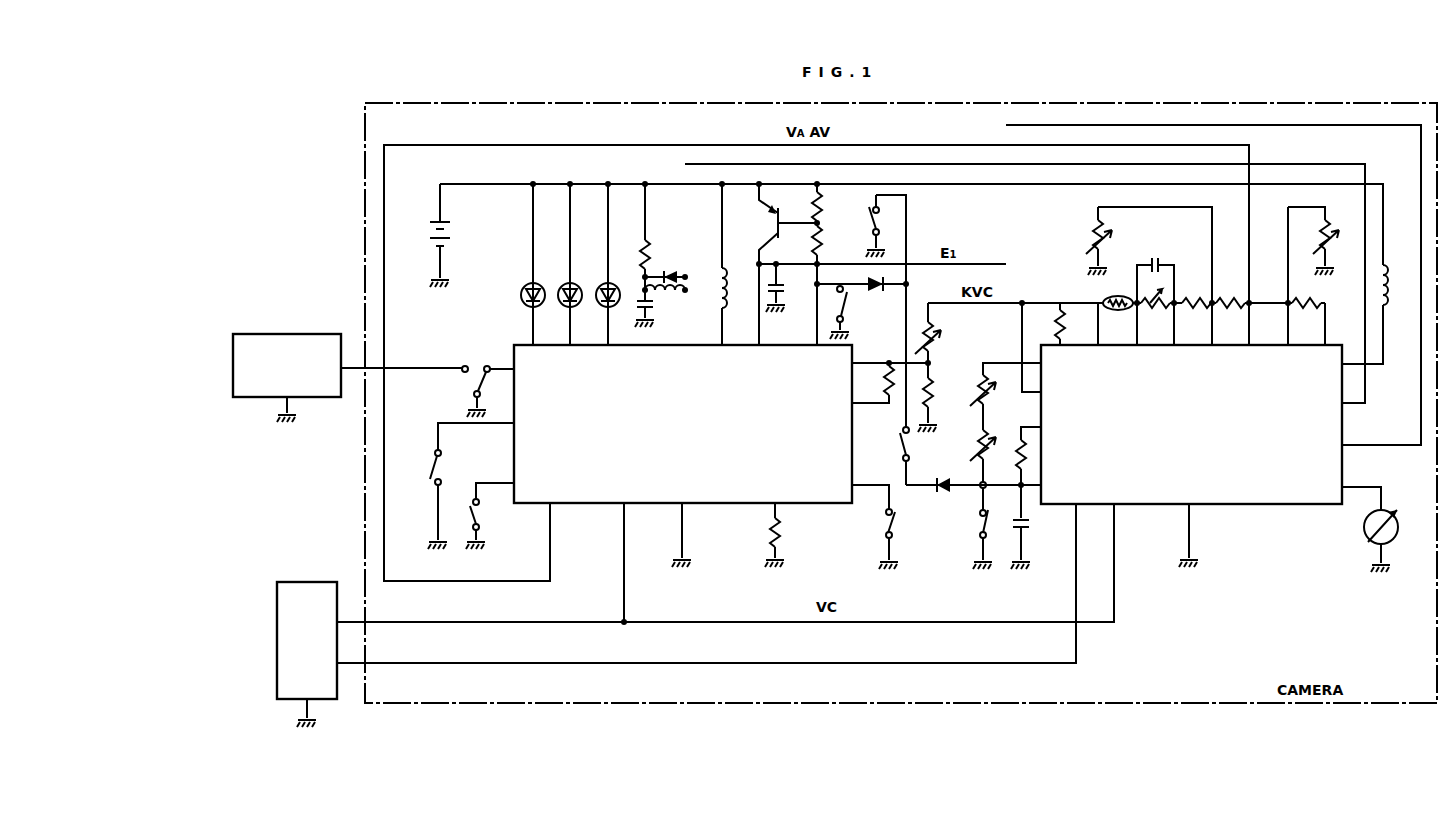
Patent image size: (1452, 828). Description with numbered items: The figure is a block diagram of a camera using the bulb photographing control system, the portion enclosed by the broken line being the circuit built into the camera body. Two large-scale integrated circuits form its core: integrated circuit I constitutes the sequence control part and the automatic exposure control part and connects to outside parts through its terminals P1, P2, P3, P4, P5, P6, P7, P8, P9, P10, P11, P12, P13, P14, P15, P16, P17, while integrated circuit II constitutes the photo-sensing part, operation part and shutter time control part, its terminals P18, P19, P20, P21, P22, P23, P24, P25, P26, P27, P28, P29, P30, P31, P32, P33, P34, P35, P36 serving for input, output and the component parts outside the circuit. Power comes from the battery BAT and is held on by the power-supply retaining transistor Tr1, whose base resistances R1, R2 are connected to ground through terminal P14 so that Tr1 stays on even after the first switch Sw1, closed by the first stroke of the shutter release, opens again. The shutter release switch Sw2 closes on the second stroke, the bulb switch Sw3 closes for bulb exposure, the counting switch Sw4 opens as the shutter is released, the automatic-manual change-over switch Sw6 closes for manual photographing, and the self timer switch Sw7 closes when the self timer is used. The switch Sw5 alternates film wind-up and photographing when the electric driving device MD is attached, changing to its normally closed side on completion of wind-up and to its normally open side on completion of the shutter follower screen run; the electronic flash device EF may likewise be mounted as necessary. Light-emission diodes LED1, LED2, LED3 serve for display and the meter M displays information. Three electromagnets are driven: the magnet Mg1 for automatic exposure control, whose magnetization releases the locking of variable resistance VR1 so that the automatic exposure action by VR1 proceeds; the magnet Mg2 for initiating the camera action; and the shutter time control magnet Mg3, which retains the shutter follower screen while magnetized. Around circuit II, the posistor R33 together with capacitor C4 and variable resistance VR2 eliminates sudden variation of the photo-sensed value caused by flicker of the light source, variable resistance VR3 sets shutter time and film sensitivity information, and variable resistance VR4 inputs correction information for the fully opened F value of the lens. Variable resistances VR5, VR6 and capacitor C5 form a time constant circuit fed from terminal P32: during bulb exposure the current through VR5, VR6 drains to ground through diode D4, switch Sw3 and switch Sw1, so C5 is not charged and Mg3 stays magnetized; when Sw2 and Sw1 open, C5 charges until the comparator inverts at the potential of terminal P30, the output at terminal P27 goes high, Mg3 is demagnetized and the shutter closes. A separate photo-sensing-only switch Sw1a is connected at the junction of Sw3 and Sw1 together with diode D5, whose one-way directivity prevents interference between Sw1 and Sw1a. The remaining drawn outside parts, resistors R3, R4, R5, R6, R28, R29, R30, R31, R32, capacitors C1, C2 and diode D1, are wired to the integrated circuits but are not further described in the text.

The integrated circuit I is at (600, 485).
The integrated circuit II is at (1243, 490).
The power source battery BAT is at (456, 235).
The light-emission diode LED1 is at (545, 264).
The light-emission diode LED2 is at (582, 264).
The light-emission diode LED3 is at (620, 264).
The base resistance R1 is at (826, 202).
The base resistance R2 is at (826, 283).
The resistor R3 is at (782, 535).
The resistor R4 is at (643, 254).
The resistor R5 is at (873, 383).
The variable resistor R6 is at (936, 333).
The resistor R28 is at (1072, 324).
The resistor R29 is at (1192, 321).
The resistor R30 is at (1230, 321).
The resistor R31 is at (1306, 321).
The resistor R32 is at (1015, 456).
The posistor R33 is at (1115, 320).
The variable resistance VR1 is at (940, 397).
The variable resistance VR2 is at (1153, 317).
The variable resistance VR3 is at (1092, 234).
The variable resistance VR4 is at (1313, 255).
The variable resistance VR5 is at (1005, 396).
The variable resistance VR6 is at (970, 456).
The capacitor C1 is at (785, 288).
The capacitor C2 is at (650, 302).
The capacitor C4 is at (1155, 271).
The time constant capacitor C5 is at (1031, 527).
The diode D1 is at (665, 269).
The diode D4 is at (944, 475).
The diode D5 is at (886, 291).
The magnet for automatic exposure control Mg1 is at (740, 264).
The magnet for initiating camera action Mg2 is at (668, 293).
The shutter time control magnet Mg3 is at (1401, 272).
The transistor Tr1 is at (766, 224).
The first switch Sw1 is at (888, 239).
The switch for photo-sensing only Sw1a is at (857, 312).
The shutter release switch Sw2 is at (888, 527).
The bulb switch Sw3 is at (890, 384).
The counting switch Sw4 is at (970, 528).
The change-over switch Sw5 is at (427, 382).
The automatic-manual change-over switch Sw6 is at (471, 486).
The self timer switch Sw7 is at (490, 516).
The information display meter M is at (1378, 529).
The electric driving device MD is at (236, 343).
The electronic flash device EF is at (277, 600).
The terminal P1 is at (775, 490).
The terminal P2 is at (840, 396).
The terminal P3 is at (840, 358).
The terminal P4 is at (719, 358).
The terminal P5 is at (684, 490).
The terminal P6 is at (680, 358).
The terminal P7 is at (604, 358).
The terminal P8 is at (567, 358).
The terminal P9 is at (531, 358).
The terminal P10 is at (529, 424).
The terminal P11 is at (629, 490).
The terminal P12 is at (555, 492).
The terminal P13 is at (529, 484).
The terminal P14 is at (814, 358).
The terminal P15 is at (836, 490).
The terminal P16 is at (529, 380).
The terminal P17 is at (757, 358).
The terminal P18 is at (1067, 358).
The terminal P19 is at (1102, 358).
The terminal P20 is at (1140, 358).
The terminal P21 is at (1176, 358).
The terminal P22 is at (1212, 358).
The terminal P23 is at (1250, 358).
The terminal P24 is at (1289, 358).
The terminal P25 is at (1325, 358).
The terminal P26 is at (1326, 488).
The terminal P27 is at (1326, 383).
The terminal P28 is at (1326, 407).
The terminal P29 is at (1191, 492).
The terminal P30 is at (1057, 488).
The terminal P31 is at (1057, 429).
The terminal P32 is at (1057, 372).
The terminal P33 is at (1057, 396).
The terminal P34 is at (1116, 492).
The terminal P35 is at (1081, 492).
The terminal P36 is at (1323, 447).